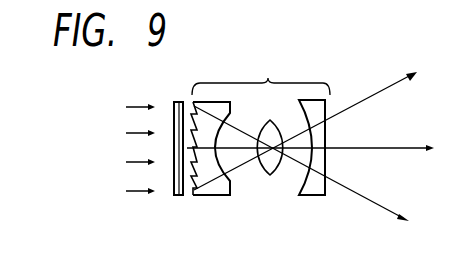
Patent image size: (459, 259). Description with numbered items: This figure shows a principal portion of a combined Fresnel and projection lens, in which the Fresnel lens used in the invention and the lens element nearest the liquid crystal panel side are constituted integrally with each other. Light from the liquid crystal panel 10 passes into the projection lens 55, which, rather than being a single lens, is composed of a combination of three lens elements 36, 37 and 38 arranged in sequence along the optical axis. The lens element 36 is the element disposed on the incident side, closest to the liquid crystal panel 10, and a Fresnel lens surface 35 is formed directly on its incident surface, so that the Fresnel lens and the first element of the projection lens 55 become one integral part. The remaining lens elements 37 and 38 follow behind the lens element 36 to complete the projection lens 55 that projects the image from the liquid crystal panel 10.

The liquid crystal panel 10 is at (178, 102).
The Fresnel lens surface 35 is at (194, 188).
The lens element 36 is at (213, 196).
The lens element 37 is at (268, 176).
The lens element 38 is at (312, 196).
The projection lens 55 is at (261, 75).